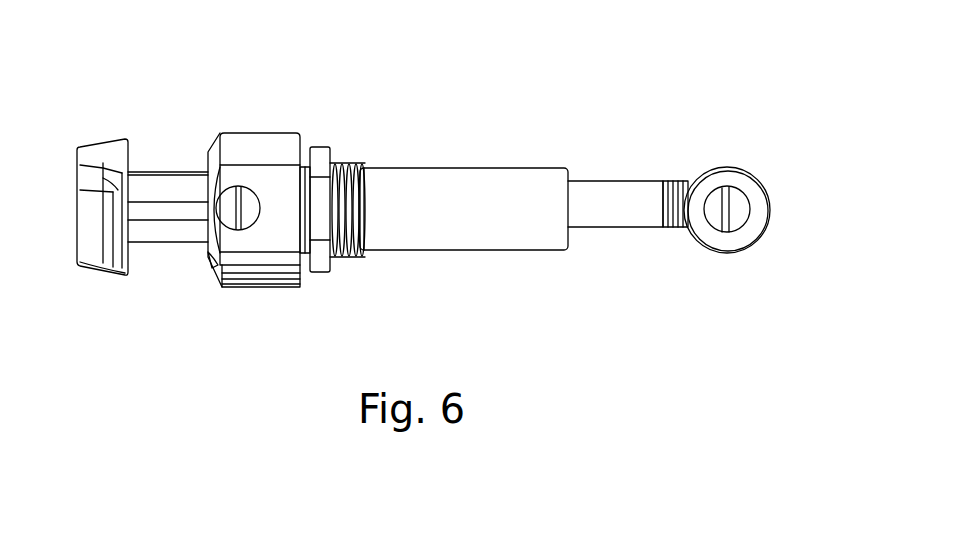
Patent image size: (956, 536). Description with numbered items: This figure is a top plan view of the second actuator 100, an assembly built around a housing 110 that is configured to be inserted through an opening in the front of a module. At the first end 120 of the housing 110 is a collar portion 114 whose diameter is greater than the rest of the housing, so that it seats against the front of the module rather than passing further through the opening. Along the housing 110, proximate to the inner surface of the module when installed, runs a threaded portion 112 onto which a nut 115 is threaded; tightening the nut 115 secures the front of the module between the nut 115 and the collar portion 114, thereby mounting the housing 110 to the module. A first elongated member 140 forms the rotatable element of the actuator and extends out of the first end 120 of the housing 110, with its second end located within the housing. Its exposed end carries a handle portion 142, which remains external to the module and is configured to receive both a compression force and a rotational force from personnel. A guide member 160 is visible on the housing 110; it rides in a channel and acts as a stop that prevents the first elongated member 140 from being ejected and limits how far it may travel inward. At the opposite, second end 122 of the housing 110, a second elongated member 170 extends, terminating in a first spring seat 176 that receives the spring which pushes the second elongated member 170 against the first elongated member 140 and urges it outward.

The second actuator 100 is at (689, 84).
The housing 110 is at (281, 131).
The threaded portion 112 is at (354, 159).
The collar portion 114 is at (242, 140).
The nut 115 is at (317, 147).
The first end of the housing 120 is at (207, 162).
The second end of the housing 122 is at (572, 167).
The first elongated member 140 is at (102, 142).
The handle portion 142 is at (95, 268).
The guide member 160 is at (257, 217).
The second elongated member 170 is at (640, 219).
The first spring seat 176 is at (742, 172).